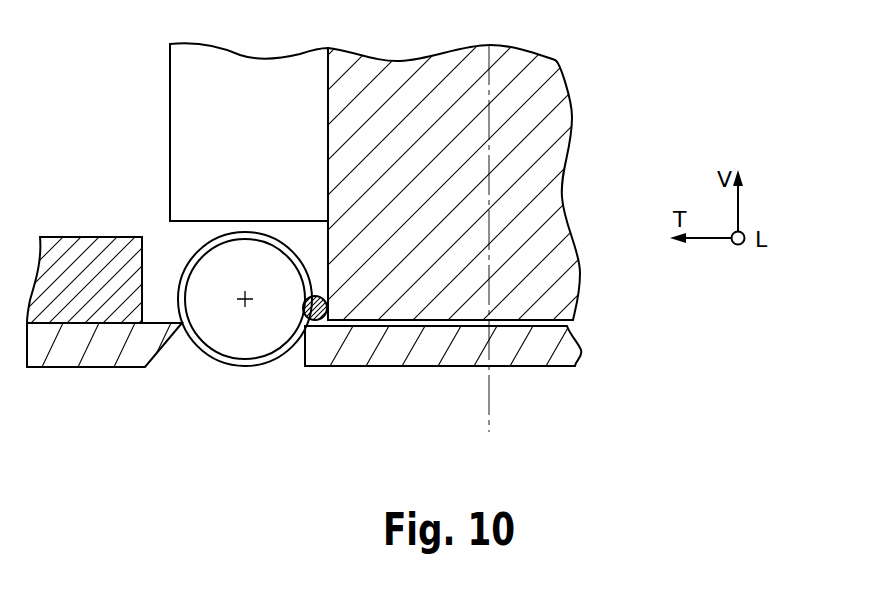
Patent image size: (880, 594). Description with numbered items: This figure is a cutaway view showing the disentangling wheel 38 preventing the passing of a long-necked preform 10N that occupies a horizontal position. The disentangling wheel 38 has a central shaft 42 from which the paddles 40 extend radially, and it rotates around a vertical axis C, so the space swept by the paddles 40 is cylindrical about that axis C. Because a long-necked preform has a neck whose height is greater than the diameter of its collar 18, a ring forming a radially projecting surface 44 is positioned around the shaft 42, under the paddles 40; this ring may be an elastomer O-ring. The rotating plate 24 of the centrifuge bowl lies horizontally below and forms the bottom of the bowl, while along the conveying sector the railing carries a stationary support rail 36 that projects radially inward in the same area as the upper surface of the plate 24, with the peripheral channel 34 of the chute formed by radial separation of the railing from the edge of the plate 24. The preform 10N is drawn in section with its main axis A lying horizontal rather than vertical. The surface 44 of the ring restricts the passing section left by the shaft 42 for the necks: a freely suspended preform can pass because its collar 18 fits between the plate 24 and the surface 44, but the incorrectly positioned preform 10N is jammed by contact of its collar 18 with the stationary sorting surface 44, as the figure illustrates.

The preform in incorrect position 10N is at (250, 338).
The collar 18 is at (203, 347).
The rotating plate 24 is at (563, 355).
The peripheral channel 34 is at (244, 359).
The support rail 36 is at (105, 348).
The disentangling wheel 38 is at (460, 240).
The paddle 40 is at (220, 123).
The central shaft 42 is at (432, 285).
The radially projecting surface 44 is at (318, 327).
The main axis A is at (240, 299).
The vertical axis C is at (489, 398).